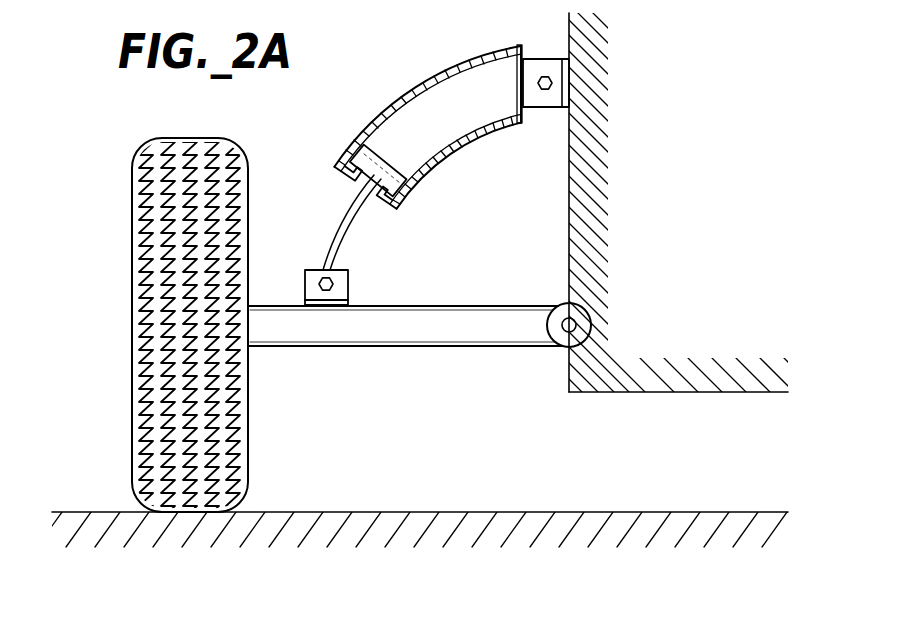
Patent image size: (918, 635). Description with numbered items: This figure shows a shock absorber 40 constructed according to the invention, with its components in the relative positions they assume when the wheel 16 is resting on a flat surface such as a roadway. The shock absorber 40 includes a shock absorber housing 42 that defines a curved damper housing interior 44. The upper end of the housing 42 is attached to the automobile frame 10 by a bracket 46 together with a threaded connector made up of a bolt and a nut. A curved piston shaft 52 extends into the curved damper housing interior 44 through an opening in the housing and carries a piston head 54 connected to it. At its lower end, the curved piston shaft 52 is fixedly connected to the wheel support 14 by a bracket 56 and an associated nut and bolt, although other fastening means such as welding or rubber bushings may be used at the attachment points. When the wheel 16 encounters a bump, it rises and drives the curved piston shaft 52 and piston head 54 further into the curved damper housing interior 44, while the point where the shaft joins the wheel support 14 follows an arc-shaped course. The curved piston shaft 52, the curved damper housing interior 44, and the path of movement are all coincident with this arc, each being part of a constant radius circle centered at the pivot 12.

The automobile frame 10 is at (625, 392).
The pivot 12 is at (560, 347).
The wheel support 14 is at (365, 345).
The wheel 16 is at (133, 398).
The shock absorber 40 is at (436, 62).
The shock absorber housing 42 is at (453, 153).
The curved damper housing interior 44 is at (412, 110).
The bracket 46 is at (548, 58).
The curved piston shaft 52 is at (331, 240).
The piston head 54 is at (380, 150).
The bracket 56 is at (343, 277).